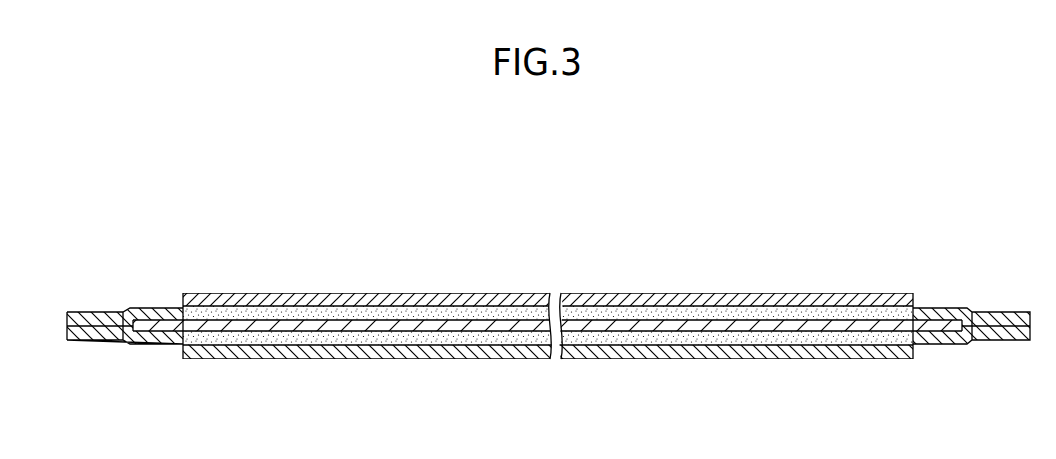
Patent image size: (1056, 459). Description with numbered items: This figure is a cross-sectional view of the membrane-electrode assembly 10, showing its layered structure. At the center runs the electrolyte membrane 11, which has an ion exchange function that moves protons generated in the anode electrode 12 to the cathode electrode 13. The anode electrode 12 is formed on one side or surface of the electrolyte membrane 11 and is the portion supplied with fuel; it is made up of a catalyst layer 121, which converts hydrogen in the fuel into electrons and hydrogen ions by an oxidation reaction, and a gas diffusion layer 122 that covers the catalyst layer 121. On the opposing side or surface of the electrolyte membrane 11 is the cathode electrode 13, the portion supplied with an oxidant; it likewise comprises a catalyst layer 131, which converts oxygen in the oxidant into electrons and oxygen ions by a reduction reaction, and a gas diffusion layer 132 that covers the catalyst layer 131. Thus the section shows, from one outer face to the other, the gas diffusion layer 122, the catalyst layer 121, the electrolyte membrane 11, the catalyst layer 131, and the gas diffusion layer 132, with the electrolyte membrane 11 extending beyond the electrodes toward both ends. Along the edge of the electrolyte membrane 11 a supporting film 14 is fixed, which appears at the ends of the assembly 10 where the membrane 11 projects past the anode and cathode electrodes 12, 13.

The membrane-electrode assembly 10 is at (714, 270).
The electrolyte membrane 11 is at (745, 325).
The anode electrode 12 is at (393, 232).
The catalyst layer 121 is at (468, 313).
The gas diffusion layer 122 is at (412, 299).
The cathode electrode 13 is at (393, 421).
The catalyst layer 131 is at (468, 338).
The gas diffusion layer 132 is at (412, 359).
The supporting film 14 is at (994, 320).